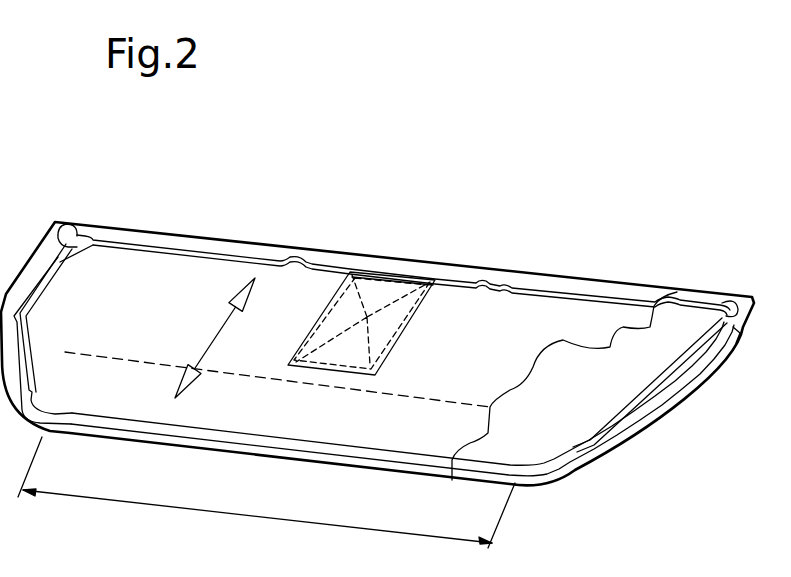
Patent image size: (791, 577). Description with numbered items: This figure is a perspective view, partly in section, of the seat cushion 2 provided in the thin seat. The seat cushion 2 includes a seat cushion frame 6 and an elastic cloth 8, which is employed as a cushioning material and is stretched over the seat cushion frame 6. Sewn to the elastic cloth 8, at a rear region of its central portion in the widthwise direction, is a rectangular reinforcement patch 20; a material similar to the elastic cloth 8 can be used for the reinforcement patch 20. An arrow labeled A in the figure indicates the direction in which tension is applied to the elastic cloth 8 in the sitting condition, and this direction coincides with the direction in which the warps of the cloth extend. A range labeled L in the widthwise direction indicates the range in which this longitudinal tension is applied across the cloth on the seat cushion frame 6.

The seat cushion 2 is at (445, 153).
The seat cushion frame 6 is at (686, 401).
The elastic cloth 8 is at (513, 325).
The reinforcement patch 20 is at (380, 290).